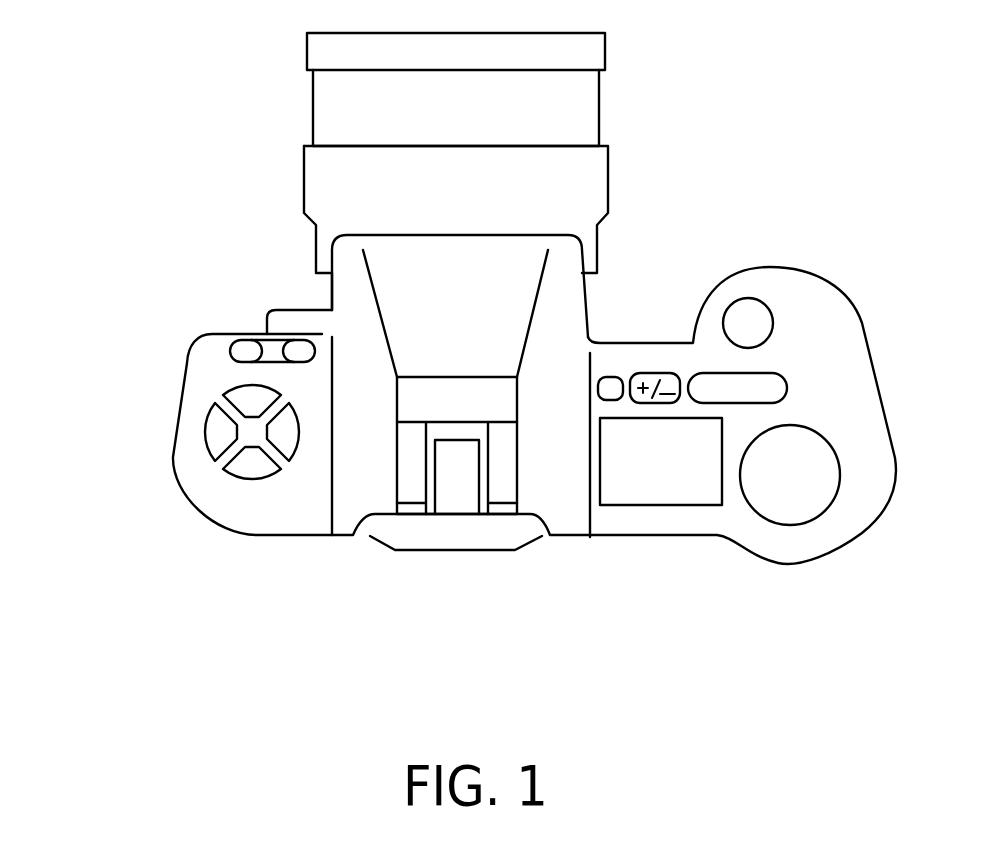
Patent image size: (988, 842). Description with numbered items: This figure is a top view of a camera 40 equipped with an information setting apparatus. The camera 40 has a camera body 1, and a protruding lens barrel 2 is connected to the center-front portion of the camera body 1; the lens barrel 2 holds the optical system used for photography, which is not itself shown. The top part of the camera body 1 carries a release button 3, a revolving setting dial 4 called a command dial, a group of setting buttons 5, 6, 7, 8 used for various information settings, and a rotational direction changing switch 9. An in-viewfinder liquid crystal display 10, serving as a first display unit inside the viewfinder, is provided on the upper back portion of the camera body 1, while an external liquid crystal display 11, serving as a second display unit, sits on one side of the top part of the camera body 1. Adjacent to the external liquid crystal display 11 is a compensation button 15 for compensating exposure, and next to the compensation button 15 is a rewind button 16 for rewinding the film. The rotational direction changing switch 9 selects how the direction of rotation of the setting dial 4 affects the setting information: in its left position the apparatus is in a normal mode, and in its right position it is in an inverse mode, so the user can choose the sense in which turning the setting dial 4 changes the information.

The camera body 1 is at (568, 513).
The protruding lens barrel 2 is at (585, 95).
The release button 3 is at (753, 313).
The setting dial 4 is at (803, 507).
The setting button 5 is at (278, 388).
The setting button 6 is at (250, 470).
The setting button 7 is at (215, 440).
The setting button 8 is at (293, 442).
The rotational direction changing switch 9 is at (300, 352).
The in-viewfinder liquid crystal display 10 is at (460, 541).
The external liquid crystal display 11 is at (695, 493).
The compensation button 15 is at (650, 377).
The rewind button 16 is at (612, 383).
The camera 40 is at (647, 672).